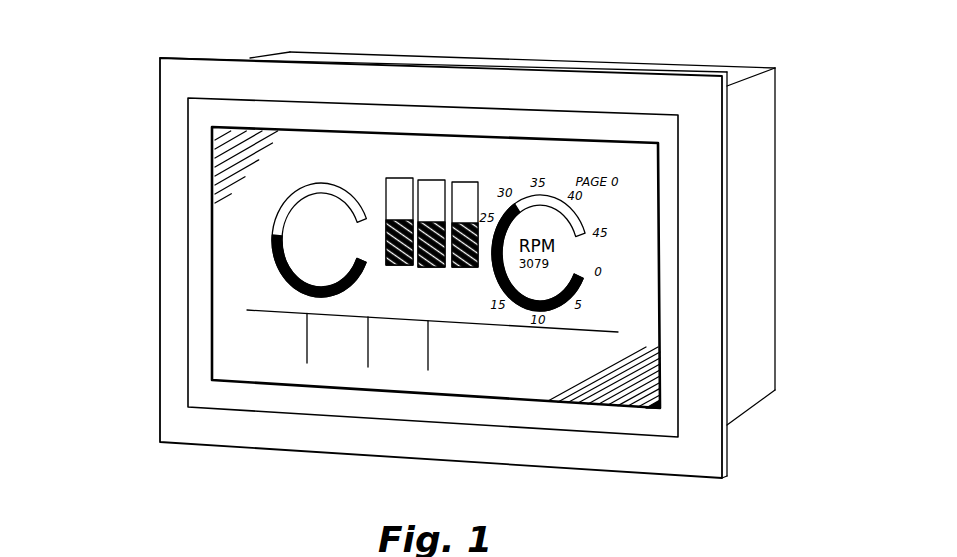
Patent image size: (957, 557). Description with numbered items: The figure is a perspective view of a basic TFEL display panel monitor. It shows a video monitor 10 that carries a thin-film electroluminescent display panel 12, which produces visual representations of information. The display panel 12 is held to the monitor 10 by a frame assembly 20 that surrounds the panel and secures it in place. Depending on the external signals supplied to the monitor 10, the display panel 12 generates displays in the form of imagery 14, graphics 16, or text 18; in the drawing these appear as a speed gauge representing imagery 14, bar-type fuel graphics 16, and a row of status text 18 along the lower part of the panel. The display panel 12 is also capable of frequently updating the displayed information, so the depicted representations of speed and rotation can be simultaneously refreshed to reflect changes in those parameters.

The video monitor 10 is at (143, 307).
The thin-film electroluminescent (TFEL) display panel 12 is at (643, 155).
The imagery 14 is at (272, 238).
The graphics 16 is at (467, 212).
The text 18 is at (283, 350).
The frame assembly 20 is at (511, 123).